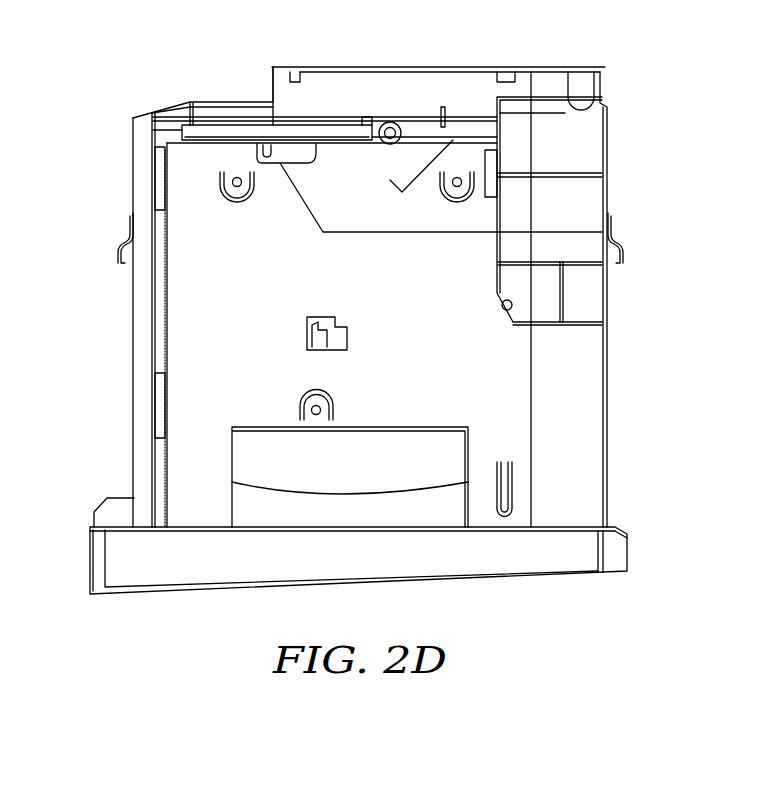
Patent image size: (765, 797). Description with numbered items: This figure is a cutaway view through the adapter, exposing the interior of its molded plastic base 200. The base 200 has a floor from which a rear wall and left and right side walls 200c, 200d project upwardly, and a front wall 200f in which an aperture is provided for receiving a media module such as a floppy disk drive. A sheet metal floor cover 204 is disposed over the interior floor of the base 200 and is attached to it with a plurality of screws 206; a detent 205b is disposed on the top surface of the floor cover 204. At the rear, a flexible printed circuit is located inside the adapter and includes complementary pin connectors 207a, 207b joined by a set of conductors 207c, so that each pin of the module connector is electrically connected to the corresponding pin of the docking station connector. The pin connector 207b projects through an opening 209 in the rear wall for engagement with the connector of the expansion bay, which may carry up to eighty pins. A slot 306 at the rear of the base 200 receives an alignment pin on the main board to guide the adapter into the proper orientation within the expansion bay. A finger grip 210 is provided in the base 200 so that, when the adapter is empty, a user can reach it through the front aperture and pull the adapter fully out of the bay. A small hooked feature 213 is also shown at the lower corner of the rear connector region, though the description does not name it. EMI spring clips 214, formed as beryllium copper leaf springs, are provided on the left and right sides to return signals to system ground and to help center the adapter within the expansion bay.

The base 200 is at (106, 112).
The left side wall 200c is at (607, 187).
The right side wall 200d is at (133, 344).
The front wall 200f is at (183, 596).
The sheet metal floor cover 204 is at (250, 304).
The detent 205b is at (510, 486).
The screws 206 is at (244, 192).
The pin connector 207a is at (213, 133).
The pin connector 207b is at (474, 67).
The conductors 207c is at (282, 88).
The opening 209 is at (360, 60).
The finger grip 210 is at (370, 473).
The hook 213 is at (508, 316).
The EMI spring clip 214 is at (120, 248).
The slot 306 is at (582, 75).